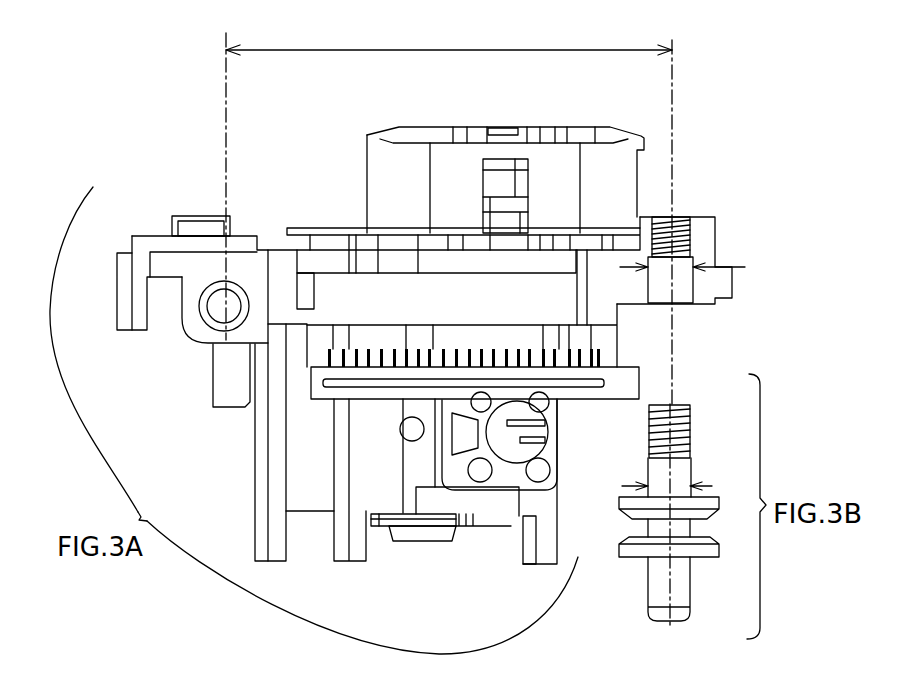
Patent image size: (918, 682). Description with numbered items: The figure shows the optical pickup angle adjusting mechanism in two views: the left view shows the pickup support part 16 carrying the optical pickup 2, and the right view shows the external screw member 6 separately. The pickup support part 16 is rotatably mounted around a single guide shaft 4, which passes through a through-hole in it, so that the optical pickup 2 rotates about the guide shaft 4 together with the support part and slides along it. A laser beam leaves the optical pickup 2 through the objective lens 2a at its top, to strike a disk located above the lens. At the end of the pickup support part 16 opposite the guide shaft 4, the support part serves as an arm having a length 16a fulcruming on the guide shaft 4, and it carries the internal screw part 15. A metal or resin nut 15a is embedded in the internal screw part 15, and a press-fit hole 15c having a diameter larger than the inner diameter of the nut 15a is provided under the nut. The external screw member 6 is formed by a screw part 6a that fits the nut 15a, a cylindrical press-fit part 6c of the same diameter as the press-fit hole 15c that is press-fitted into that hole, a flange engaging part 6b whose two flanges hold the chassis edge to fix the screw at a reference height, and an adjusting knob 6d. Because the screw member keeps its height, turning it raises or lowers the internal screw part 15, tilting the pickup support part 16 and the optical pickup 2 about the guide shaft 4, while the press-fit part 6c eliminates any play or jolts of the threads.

In FIG. 3A, the optical pickup 2 is at (505, 153).
In FIG. 3A, the objective lens 2a is at (507, 128).
In FIG. 3A, the guide shaft 4 is at (238, 302).
In FIG. 3B, the external screw member 6 is at (664, 512).
In FIG. 3B, the screw part 6a is at (642, 405).
In FIG. 3B, the flange engaging part 6b is at (616, 498).
In FIG. 3B, the cylindrical press-fit part 6c is at (616, 458).
In FIG. 3B, the adjusting knob 6d is at (659, 587).
In FIG. 3A, the internal screw part 15 is at (687, 242).
In FIG. 3A, the nut 15a is at (683, 235).
In FIG. 3A, the press-fit hole 15c is at (693, 288).
In FIG. 3A, the pickup support part 16 is at (379, 291).
In FIG. 3A, the length of the arm 16a is at (449, 43).